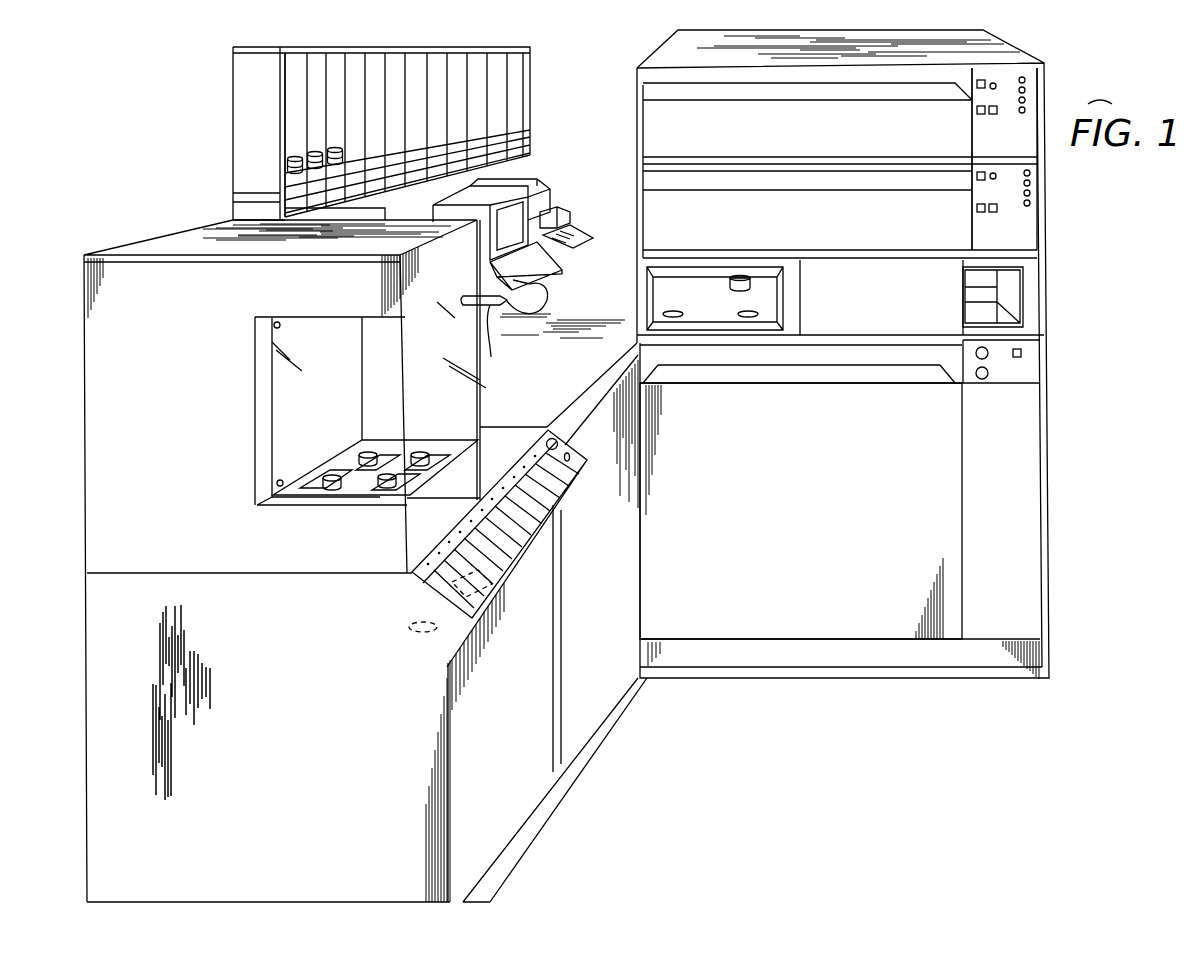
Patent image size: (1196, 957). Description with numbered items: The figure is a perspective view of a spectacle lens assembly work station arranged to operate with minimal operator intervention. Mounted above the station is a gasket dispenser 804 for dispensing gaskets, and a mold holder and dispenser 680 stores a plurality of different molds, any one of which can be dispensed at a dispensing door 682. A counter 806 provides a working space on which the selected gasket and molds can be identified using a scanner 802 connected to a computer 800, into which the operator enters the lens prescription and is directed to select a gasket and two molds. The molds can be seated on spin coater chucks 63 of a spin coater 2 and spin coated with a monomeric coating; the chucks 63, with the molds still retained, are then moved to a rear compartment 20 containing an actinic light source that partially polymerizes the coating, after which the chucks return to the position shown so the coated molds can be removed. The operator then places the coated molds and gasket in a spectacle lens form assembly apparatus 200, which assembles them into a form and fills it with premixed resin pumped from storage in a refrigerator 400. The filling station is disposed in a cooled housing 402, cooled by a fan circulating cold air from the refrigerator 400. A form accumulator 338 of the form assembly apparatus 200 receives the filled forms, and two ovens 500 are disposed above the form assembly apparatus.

The rear compartment 20 is at (130, 396).
The spin coater 2 is at (190, 450).
The spin coater chucks 63 is at (419, 452).
The gasket dispenser 804 is at (538, 133).
The computer 800 is at (565, 220).
The scanner 802 is at (504, 327).
The counter 806 is at (529, 324).
The spectacle lens form assembly apparatus 200 is at (737, 263).
The ovens 500 is at (1023, 212).
The form accumulator 338 is at (990, 315).
The cooled housing 402 is at (858, 315).
The refrigerator 400 is at (1016, 445).
The dispensing door 682 is at (508, 548).
The mold holder and dispenser 680 is at (508, 794).